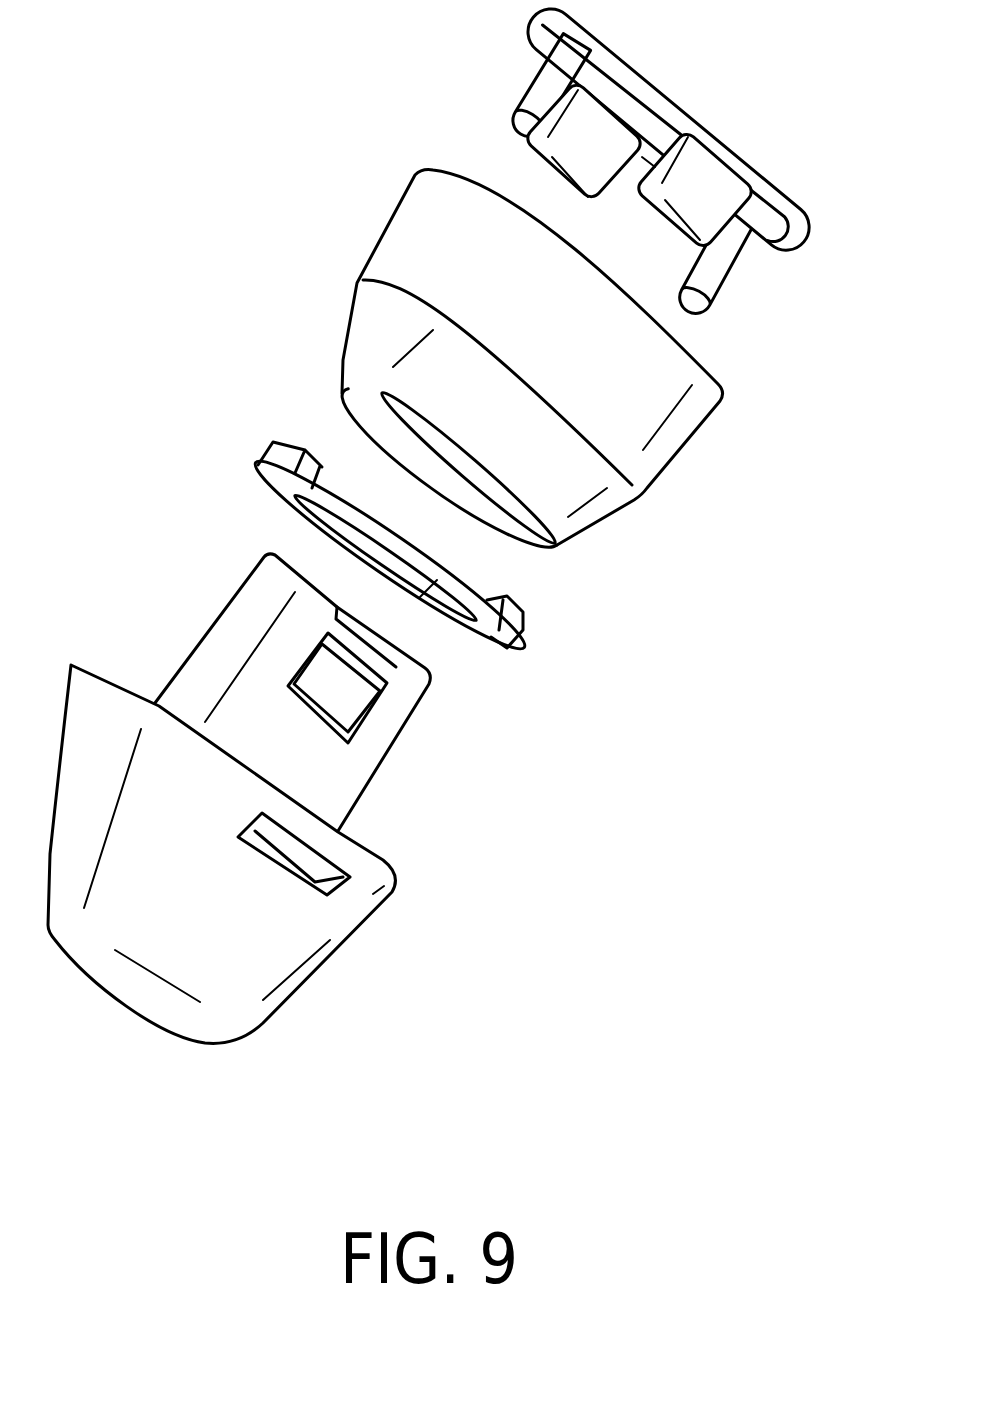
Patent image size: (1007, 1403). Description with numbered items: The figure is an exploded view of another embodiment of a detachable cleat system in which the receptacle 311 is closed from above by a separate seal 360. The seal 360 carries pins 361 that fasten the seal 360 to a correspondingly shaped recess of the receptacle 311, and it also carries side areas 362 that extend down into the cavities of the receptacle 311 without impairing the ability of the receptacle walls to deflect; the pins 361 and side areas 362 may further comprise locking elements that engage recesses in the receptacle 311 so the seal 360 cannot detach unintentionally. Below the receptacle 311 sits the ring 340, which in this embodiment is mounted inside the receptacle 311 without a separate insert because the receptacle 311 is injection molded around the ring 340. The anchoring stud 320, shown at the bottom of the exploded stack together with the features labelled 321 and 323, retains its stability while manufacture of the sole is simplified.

The receptacle 311 is at (637, 413).
The anchoring stud 320 is at (253, 973).
The mounting block 321 is at (328, 772).
The recess 323 is at (348, 685).
The ring 340 is at (487, 600).
The seal 360 is at (625, 80).
The pins 361 is at (733, 253).
The side areas 362 is at (715, 177).